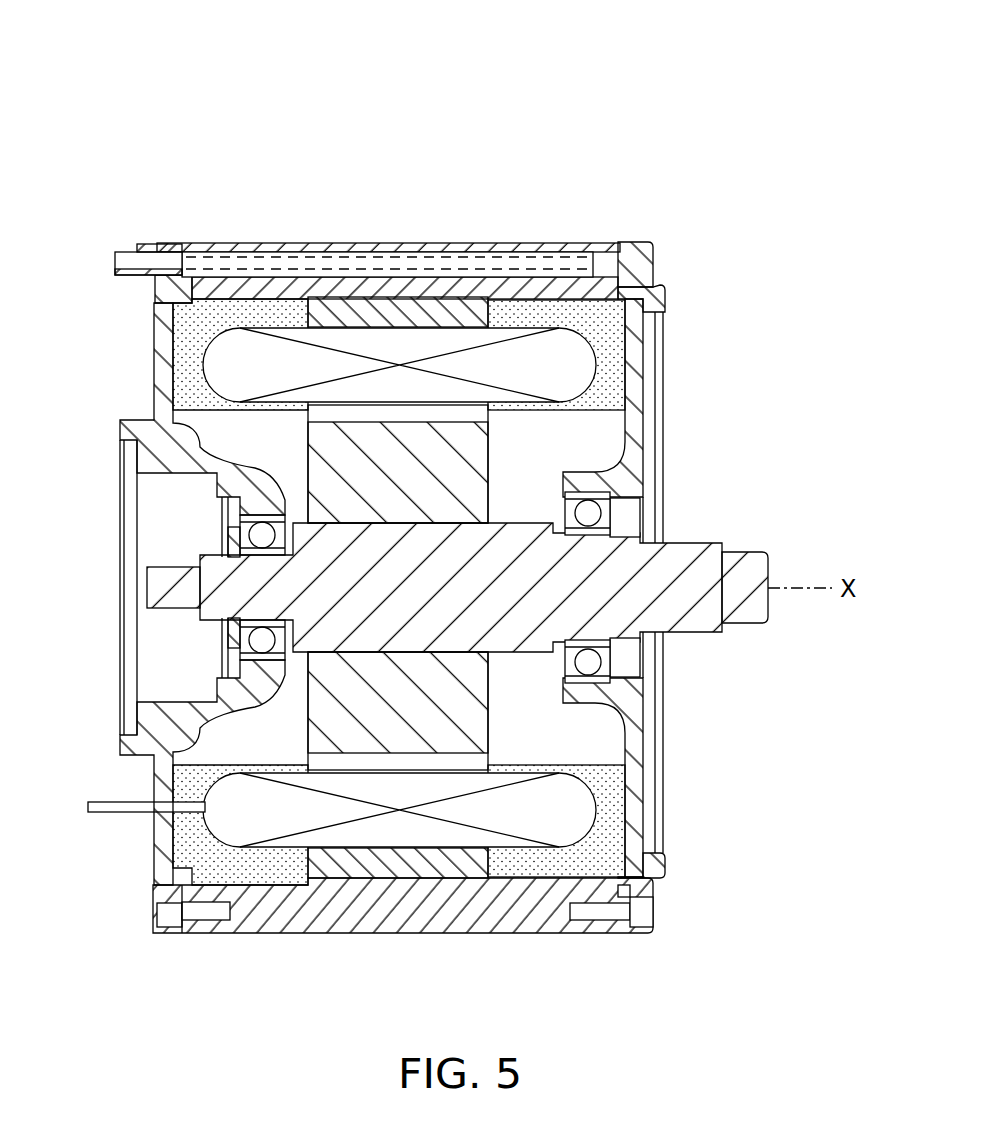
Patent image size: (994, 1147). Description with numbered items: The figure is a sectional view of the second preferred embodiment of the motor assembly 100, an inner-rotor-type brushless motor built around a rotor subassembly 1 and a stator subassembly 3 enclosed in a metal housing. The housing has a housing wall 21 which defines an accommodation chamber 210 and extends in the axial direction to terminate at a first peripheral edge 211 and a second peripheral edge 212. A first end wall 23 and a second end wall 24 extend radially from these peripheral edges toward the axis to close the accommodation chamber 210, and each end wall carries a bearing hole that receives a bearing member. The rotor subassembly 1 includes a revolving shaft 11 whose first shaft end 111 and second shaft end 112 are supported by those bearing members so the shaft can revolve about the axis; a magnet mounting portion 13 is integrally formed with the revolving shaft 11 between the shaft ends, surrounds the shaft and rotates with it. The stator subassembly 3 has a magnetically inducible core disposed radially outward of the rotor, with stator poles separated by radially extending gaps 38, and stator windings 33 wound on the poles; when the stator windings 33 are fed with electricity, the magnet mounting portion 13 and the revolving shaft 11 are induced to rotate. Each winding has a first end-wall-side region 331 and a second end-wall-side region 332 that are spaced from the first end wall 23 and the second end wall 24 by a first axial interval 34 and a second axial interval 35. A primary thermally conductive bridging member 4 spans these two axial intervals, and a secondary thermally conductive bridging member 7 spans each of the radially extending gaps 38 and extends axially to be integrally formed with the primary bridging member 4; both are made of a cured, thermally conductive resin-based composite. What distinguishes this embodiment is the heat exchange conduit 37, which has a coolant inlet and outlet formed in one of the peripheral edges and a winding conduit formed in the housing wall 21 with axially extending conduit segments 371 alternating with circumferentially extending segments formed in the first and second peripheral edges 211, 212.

The motor assembly 100 is at (242, 82).
The rotor subassembly 1 is at (745, 547).
The revolving shaft 11 is at (692, 530).
The first shaft end 111 is at (222, 630).
The second shaft end 112 is at (600, 603).
The magnet mounting portion 13 is at (227, 683).
The housing wall 21 is at (424, 242).
The accommodation chamber 210 is at (379, 935).
The first peripheral edge 211 is at (163, 243).
The second peripheral edge 212 is at (632, 241).
The first end wall 23 is at (168, 335).
The second end wall 24 is at (653, 289).
The stator subassembly 3 is at (613, 358).
The stator windings 33 is at (608, 325).
The first end-wall-side region 331 is at (190, 302).
The second end-wall-side region 332 is at (582, 347).
The first axial interval 34 is at (192, 360).
The second axial interval 35 is at (640, 377).
The heat exchange conduit 37 is at (310, 242).
The axially extending conduit segments 371 is at (370, 242).
The radially extending gaps 38 is at (535, 308).
The primary thermally conductive bridging member 4 is at (677, 588).
The secondary thermally conductive bridging member 7 is at (432, 245).